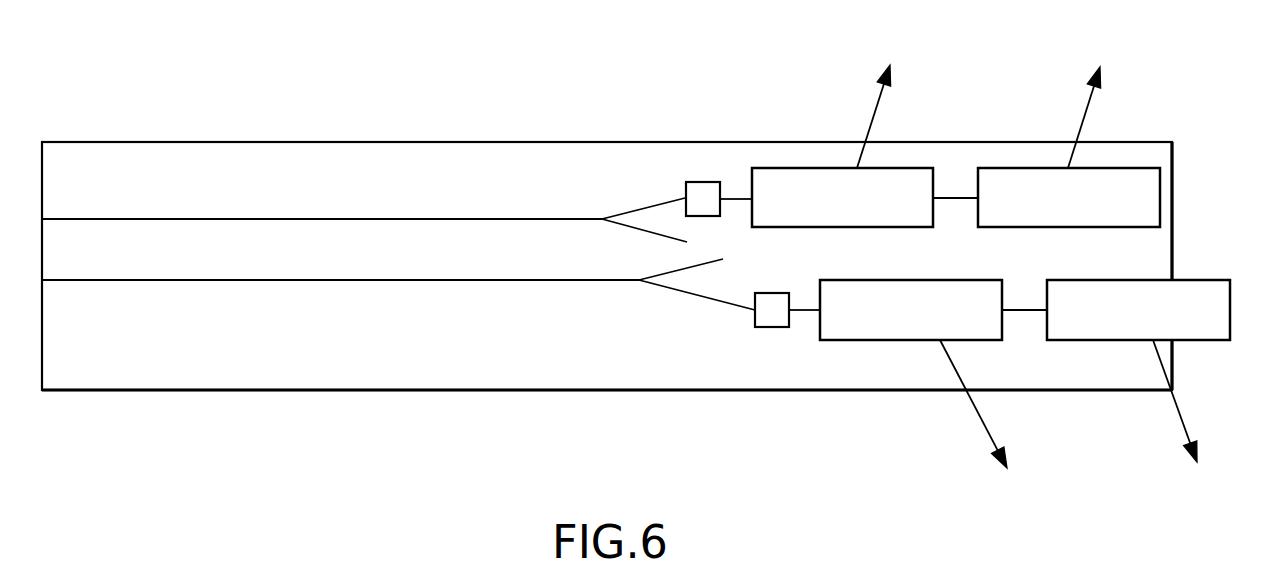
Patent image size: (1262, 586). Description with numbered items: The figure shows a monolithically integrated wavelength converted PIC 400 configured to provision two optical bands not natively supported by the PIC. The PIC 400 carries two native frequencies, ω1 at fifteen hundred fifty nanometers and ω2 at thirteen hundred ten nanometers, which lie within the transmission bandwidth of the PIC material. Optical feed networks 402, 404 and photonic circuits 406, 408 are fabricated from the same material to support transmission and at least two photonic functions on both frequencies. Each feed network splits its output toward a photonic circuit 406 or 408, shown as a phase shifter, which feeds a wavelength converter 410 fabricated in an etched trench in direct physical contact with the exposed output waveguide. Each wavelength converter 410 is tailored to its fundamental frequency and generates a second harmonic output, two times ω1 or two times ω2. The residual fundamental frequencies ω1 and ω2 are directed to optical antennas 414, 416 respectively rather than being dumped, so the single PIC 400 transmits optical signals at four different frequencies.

The wavelength converted PIC 400 is at (160, 70).
The optical feed network 402 is at (503, 219).
The optical feed network 404 is at (507, 280).
The photonic circuit 406 is at (698, 183).
The photonic circuit 408 is at (755, 323).
The wavelength converter 410 is at (905, 168).
The optical antenna 414 is at (1137, 168).
The optical antenna 416 is at (1180, 280).